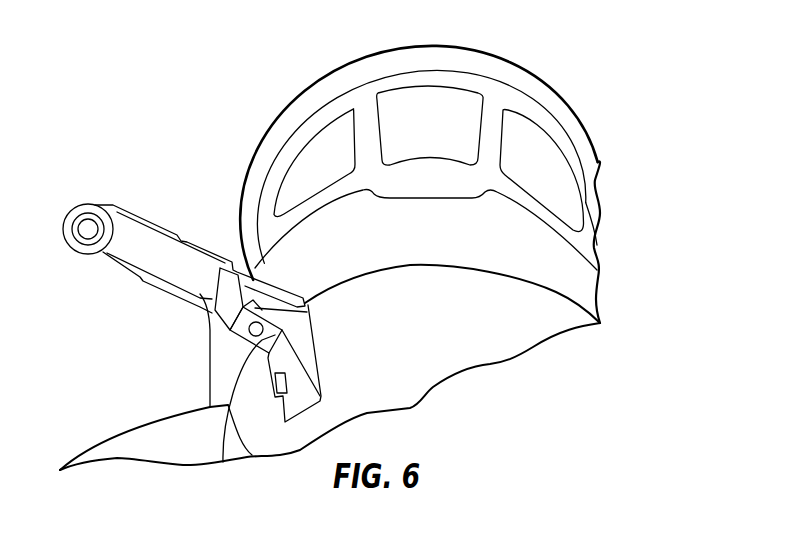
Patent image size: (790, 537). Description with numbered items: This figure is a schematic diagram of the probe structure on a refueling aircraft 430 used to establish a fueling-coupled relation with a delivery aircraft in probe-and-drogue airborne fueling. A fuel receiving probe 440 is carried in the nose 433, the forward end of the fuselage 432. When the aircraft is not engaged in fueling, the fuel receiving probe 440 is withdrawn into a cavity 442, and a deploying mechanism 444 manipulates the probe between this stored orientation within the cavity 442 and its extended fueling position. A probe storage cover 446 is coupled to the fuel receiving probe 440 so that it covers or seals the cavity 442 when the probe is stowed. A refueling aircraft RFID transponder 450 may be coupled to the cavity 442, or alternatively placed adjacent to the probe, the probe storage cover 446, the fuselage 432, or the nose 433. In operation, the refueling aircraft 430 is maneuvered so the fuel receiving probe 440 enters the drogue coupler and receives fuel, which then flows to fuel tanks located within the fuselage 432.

The refueling aircraft 430 is at (197, 55).
The fuselage 432 is at (205, 377).
The nose 433 is at (445, 326).
The fuel receiving probe 440 is at (87, 204).
The cavity 442 is at (313, 397).
The deploying mechanism 444 is at (237, 322).
The probe storage cover 446 is at (158, 224).
The refueling aircraft RFID transponder 450 is at (227, 450).